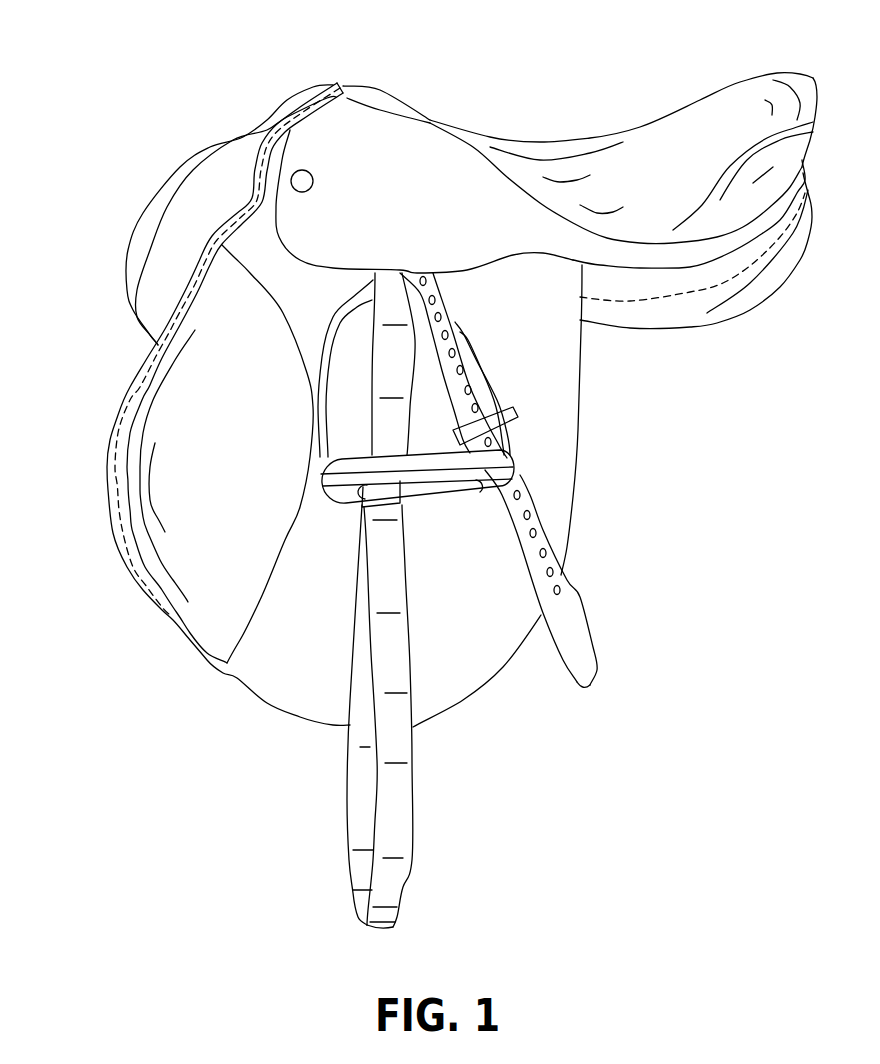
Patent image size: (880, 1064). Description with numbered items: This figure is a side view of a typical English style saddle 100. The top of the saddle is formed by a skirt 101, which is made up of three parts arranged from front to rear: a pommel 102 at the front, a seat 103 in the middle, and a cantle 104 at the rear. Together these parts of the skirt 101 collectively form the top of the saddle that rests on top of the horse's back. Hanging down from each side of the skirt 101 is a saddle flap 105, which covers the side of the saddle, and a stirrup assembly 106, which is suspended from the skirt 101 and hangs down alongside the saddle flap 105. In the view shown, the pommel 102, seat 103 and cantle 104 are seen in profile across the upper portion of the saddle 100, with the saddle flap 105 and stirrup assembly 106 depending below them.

The English style saddle 100 is at (173, 65).
The skirt 101 is at (327, 227).
The pommel 102 is at (380, 88).
The seat 103 is at (610, 167).
The cantle 104 is at (815, 92).
The saddle flap 105 is at (480, 650).
The stirrup assembly 106 is at (494, 466).